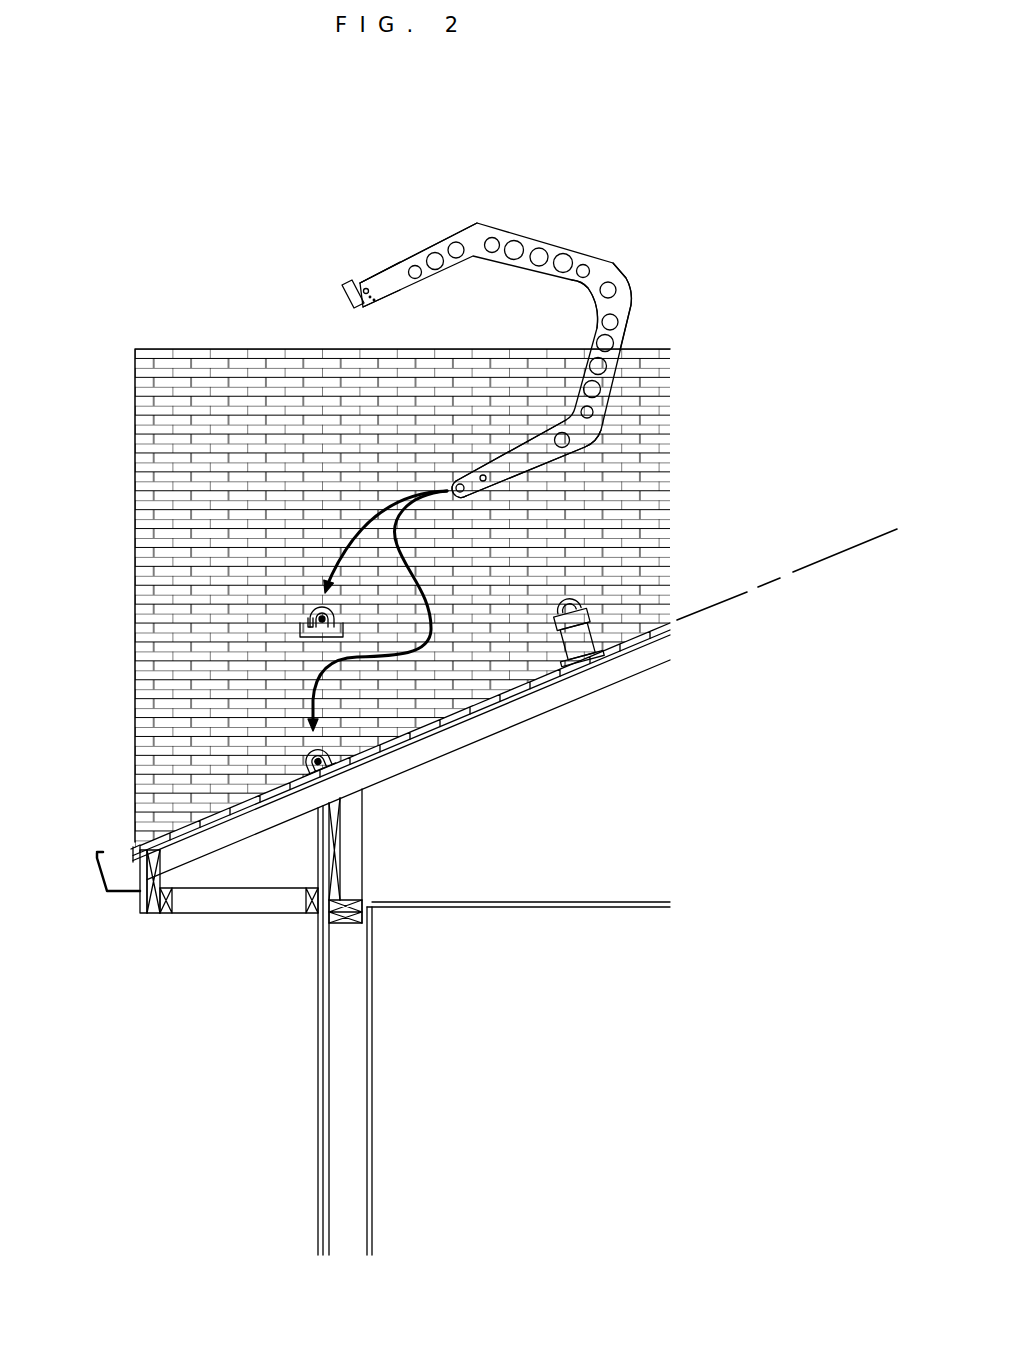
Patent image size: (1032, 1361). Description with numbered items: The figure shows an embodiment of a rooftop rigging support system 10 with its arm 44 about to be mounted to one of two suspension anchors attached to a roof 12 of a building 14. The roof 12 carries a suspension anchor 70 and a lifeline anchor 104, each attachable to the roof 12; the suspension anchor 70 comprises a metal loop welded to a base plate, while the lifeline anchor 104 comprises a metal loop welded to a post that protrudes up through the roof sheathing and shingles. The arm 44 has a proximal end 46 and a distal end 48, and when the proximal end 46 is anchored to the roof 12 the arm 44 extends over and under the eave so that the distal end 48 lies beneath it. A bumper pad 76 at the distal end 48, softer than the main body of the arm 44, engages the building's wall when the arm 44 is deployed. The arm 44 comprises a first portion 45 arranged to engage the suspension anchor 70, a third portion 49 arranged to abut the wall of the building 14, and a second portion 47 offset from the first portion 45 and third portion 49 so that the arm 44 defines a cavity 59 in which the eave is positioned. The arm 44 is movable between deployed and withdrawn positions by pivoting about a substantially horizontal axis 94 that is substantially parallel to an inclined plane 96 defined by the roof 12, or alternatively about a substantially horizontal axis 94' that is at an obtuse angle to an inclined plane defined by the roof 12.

The rooftop rigging support system 10 is at (384, 352).
The roof 12 is at (168, 498).
The building 14 is at (318, 1075).
The arm 44 is at (583, 253).
The first portion 45 is at (481, 449).
The proximal end 46 is at (471, 503).
The second portion 47 is at (600, 275).
The distal end 48 is at (354, 260).
The third portion 49 is at (386, 268).
The cavity 59 is at (567, 310).
The suspension anchor 70 is at (323, 744).
The bumper pad 76 is at (342, 310).
The substantially horizontal axis 94 is at (285, 744).
The substantially horizontal axis 94' is at (285, 596).
The inclined plane 96 is at (826, 555).
The lifeline anchor 104 is at (598, 628).